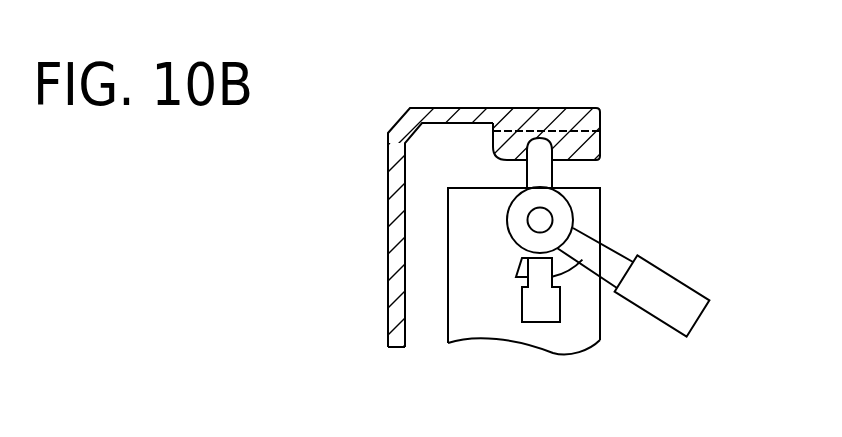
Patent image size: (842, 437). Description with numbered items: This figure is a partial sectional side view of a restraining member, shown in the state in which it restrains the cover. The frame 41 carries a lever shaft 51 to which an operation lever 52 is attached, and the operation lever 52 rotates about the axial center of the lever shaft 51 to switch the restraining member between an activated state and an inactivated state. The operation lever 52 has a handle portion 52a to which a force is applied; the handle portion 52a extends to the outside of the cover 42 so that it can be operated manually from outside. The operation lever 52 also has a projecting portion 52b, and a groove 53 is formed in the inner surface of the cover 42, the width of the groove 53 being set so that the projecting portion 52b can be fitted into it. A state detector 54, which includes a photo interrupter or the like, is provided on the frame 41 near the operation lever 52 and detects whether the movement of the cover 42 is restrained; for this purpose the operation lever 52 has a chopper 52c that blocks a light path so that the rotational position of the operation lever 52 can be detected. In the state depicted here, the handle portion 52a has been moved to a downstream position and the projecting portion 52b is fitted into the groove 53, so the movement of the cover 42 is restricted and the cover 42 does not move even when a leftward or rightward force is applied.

The frame 41 is at (570, 332).
The cover 42 is at (400, 120).
The lever shaft 51 is at (545, 215).
The operation lever 52 is at (605, 259).
The handle portion 52a is at (667, 283).
The projecting portion 52b is at (560, 130).
The chopper 52c is at (565, 260).
The groove 53 is at (515, 143).
The state detector 54 is at (530, 305).